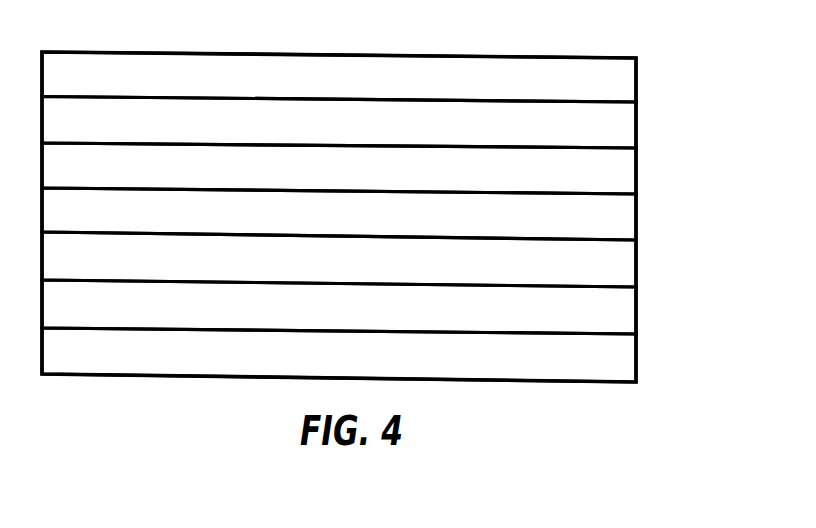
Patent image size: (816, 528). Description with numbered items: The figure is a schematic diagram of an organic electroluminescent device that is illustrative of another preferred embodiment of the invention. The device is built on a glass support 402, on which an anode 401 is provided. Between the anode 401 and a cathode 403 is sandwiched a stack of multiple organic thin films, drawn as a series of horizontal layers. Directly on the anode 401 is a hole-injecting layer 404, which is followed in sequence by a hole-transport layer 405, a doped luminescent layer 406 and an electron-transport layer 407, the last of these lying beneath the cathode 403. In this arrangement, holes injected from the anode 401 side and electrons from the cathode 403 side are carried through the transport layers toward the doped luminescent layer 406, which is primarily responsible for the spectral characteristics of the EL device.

The anode 401 is at (636, 312).
The glass support 402 is at (636, 363).
The cathode 403 is at (636, 80).
The hole-injecting layer 404 is at (636, 265).
The hole-transport layer 405 is at (636, 217).
The doped luminescent layer 406 is at (636, 170).
The electron-transport layer 407 is at (636, 127).